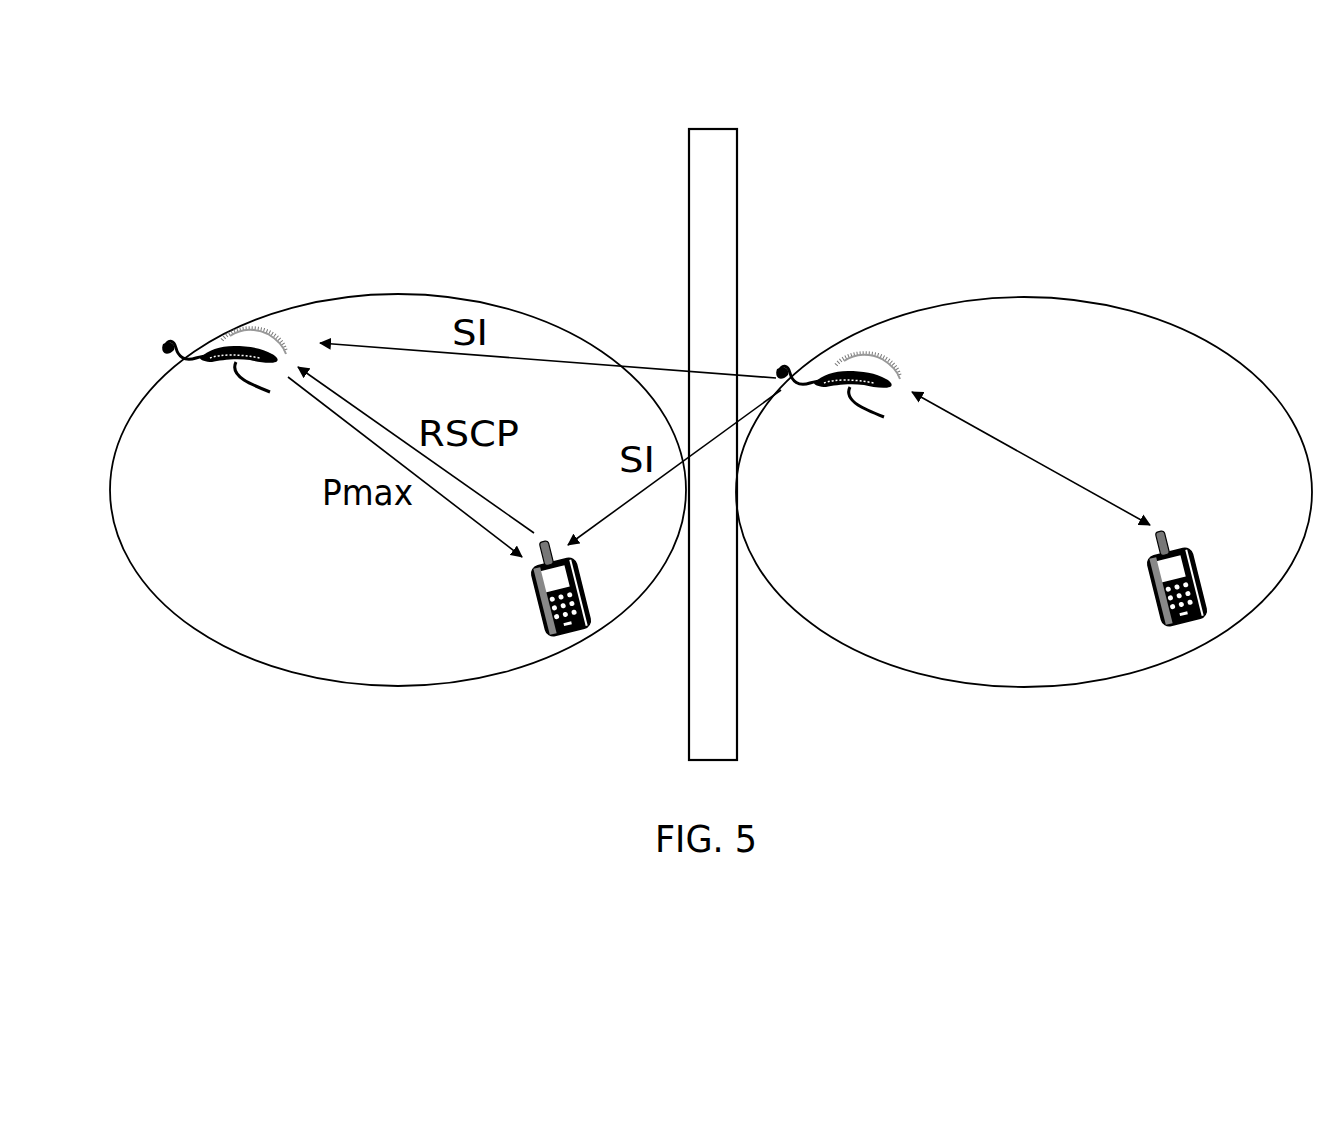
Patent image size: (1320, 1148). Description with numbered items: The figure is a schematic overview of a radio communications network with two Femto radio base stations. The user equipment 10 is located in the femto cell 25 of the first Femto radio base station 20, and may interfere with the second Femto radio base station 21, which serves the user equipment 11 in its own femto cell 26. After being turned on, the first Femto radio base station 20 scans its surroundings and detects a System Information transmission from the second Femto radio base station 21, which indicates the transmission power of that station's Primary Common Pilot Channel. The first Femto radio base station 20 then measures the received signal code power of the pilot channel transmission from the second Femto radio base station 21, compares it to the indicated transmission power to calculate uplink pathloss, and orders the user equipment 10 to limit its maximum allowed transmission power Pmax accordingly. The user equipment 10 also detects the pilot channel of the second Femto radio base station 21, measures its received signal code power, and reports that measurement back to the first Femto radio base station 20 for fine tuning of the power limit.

The user equipment 10 is at (539, 627).
The user equipment 11 is at (1155, 609).
The first Femto radio base station 20 is at (190, 342).
The second Femto radio base station 21 is at (822, 357).
The femto cell 25 is at (258, 595).
The femto cell 26 is at (964, 607).